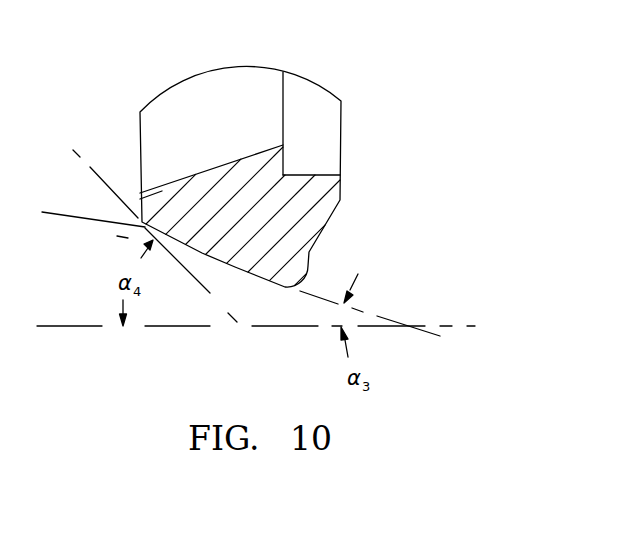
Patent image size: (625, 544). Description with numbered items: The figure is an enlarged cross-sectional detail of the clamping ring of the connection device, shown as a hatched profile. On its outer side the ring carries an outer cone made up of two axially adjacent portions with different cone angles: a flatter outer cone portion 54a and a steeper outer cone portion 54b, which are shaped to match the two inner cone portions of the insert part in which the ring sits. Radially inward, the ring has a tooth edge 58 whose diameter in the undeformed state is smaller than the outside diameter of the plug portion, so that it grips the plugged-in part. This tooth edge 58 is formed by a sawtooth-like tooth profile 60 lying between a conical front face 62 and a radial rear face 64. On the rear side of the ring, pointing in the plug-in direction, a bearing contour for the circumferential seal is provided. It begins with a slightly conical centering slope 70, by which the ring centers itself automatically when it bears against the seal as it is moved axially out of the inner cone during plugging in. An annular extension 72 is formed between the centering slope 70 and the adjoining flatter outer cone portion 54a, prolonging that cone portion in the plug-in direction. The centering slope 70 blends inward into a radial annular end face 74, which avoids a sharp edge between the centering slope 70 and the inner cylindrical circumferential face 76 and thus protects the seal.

The tooth edge 58 is at (283, 145).
The sawtooth-like tooth profile 60 is at (263, 160).
The conical front face 62 is at (180, 177).
The radial rear face 64 is at (285, 163).
The centering slope 70 is at (328, 222).
The annular extension 72 is at (293, 285).
The radial annular end face 74 is at (340, 188).
The inner cylindrical circumferential face 76 is at (317, 175).
The first outer cone portion 54a is at (257, 283).
The second outer cone portion 54b is at (102, 228).